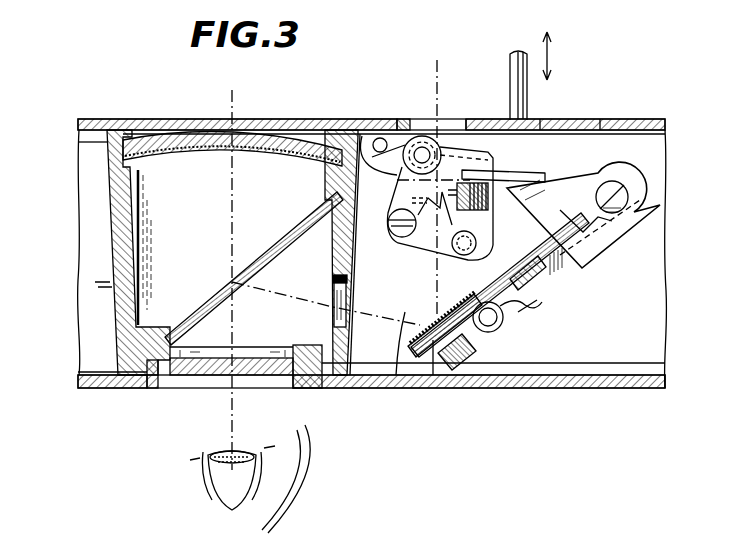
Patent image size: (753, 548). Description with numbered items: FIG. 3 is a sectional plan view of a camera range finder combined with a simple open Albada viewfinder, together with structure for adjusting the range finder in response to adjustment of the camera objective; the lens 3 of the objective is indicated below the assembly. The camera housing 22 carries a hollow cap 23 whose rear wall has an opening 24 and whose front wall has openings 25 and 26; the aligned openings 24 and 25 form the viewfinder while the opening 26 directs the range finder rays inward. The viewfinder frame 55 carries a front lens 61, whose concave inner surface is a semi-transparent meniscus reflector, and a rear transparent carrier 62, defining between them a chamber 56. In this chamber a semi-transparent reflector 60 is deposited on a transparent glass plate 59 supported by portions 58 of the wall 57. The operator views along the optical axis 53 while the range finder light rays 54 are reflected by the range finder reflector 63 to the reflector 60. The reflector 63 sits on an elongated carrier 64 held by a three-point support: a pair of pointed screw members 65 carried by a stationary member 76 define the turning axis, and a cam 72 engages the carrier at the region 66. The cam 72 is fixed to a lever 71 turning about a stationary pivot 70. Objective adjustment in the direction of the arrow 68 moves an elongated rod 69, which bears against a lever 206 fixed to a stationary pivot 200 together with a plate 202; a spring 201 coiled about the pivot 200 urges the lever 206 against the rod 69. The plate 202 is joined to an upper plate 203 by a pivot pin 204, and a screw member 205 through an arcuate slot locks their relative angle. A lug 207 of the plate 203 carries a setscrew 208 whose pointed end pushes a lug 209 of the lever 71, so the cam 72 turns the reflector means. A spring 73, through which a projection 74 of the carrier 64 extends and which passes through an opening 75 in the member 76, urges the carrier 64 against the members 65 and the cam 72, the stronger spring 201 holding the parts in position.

The lens 3 is at (207, 488).
The camera housing 22 is at (655, 300).
The hollow cap 23 is at (78, 381).
The opening 24 is at (272, 390).
The opening 25 is at (280, 128).
The opening 26 is at (448, 125).
The optical axis 53 is at (232, 95).
The range finder light rays 54 is at (437, 70).
The frame 55 is at (268, 347).
The chamber 56 is at (138, 205).
The wall 57 is at (120, 247).
The portions 58 is at (324, 186).
The transparent glass plate 59 is at (268, 247).
The semi-transparent reflector 60 is at (262, 270).
The front lens 61 is at (183, 142).
The rear transparent carrier 62 is at (152, 388).
The range finder reflector 63 is at (396, 388).
The elongated carrier 64 is at (572, 270).
The pointed screw members 65 is at (432, 388).
The region 66 is at (575, 222).
The double-headed arrow 68 is at (551, 55).
The elongated rod 69 is at (510, 60).
The stationary pivot 70 is at (630, 197).
The lever 71 is at (600, 130).
The cam 72 is at (600, 238).
The spring 73 is at (508, 318).
The projection 74 is at (470, 300).
The opening 75 is at (478, 345).
The stationary member 76 is at (556, 295).
The stationary pivot 200 is at (418, 136).
The spring 201 is at (378, 138).
The plate 202 is at (397, 180).
The plate 203 is at (415, 255).
The pivot pin 204 is at (478, 250).
The screw member 205 is at (395, 240).
The elongated lever 206 is at (556, 128).
The lug 207 is at (490, 205).
The setscrew 208 is at (492, 215).
The lug 209 is at (487, 145).